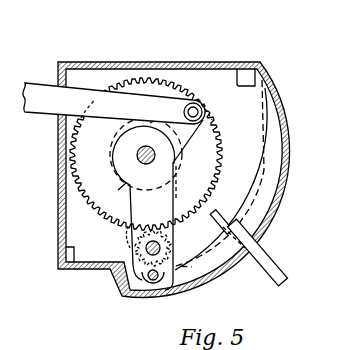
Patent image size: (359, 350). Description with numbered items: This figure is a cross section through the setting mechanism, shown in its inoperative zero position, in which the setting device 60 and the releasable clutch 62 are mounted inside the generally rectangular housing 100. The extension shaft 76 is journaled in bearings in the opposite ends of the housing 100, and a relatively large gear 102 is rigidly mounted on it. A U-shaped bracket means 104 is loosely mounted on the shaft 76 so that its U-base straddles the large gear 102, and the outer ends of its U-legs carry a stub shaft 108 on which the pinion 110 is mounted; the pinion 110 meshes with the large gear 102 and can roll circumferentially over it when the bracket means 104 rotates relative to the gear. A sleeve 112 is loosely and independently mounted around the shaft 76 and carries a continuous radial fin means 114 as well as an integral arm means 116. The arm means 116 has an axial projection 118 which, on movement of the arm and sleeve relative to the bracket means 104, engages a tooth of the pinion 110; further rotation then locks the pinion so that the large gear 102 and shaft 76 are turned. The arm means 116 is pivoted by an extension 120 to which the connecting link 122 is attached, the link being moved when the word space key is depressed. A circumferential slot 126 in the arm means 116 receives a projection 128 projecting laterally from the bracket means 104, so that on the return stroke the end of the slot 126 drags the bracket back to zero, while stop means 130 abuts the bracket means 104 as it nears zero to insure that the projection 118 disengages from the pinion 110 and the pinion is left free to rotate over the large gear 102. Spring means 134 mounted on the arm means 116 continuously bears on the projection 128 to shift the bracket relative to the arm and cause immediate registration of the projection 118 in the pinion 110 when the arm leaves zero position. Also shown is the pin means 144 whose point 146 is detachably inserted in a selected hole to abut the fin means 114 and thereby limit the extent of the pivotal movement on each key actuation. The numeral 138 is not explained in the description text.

The housing 100 is at (194, 160).
The setting device 60 is at (295, 128).
The releasable clutch 62 is at (109, 255).
The extension shaft 76 is at (155, 155).
The large gear 102 is at (146, 154).
The bracket means 104 is at (122, 283).
The stub shaft 108 is at (172, 233).
The pinion 110 is at (160, 247).
The sleeve 112 is at (177, 166).
The fin means 114 is at (108, 197).
The arm means 116 is at (158, 197).
The projection 118 is at (134, 232).
The extension 120 is at (188, 130).
The connecting link 122 is at (117, 103).
The circumferential slot 126 is at (146, 279).
The projection 128 is at (154, 281).
The stop means 130 is at (115, 275).
The spring means 134 is at (220, 178).
The curved housing wall 138 is at (213, 283).
The pin means 144 is at (272, 258).
The point 146 is at (216, 214).